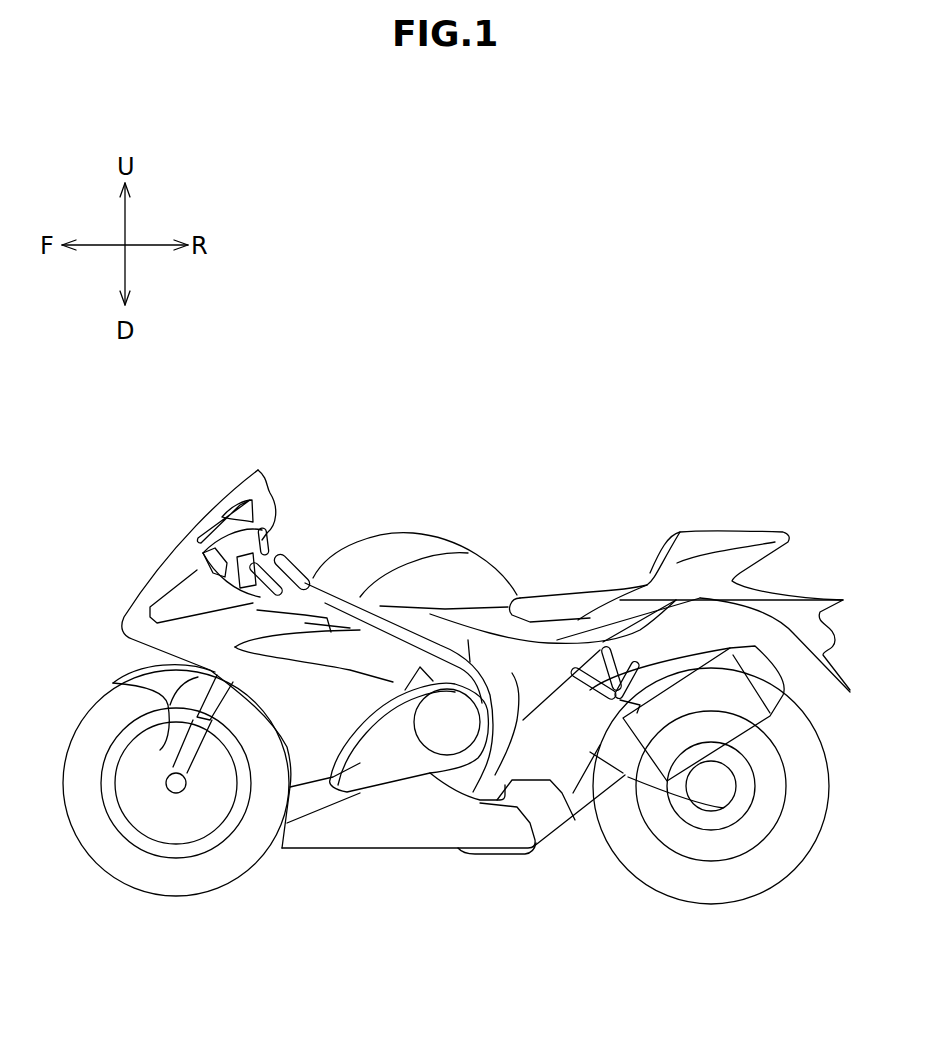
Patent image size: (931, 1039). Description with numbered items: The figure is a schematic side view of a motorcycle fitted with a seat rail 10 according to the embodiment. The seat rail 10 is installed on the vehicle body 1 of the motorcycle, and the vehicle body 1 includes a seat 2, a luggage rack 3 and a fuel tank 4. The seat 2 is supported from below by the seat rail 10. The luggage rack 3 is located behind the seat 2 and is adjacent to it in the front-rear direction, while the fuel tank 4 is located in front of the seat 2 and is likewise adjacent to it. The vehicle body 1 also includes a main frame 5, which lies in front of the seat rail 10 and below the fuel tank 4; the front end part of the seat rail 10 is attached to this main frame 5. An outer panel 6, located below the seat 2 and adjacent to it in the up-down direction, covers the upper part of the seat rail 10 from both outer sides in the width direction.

The vehicle body 1 is at (212, 499).
The seat 2 is at (580, 600).
The luggage rack 3 is at (720, 540).
The fuel tank 4 is at (473, 548).
The main frame 5 is at (537, 690).
The outer panel 6 is at (532, 634).
The seat rail 10 is at (543, 697).